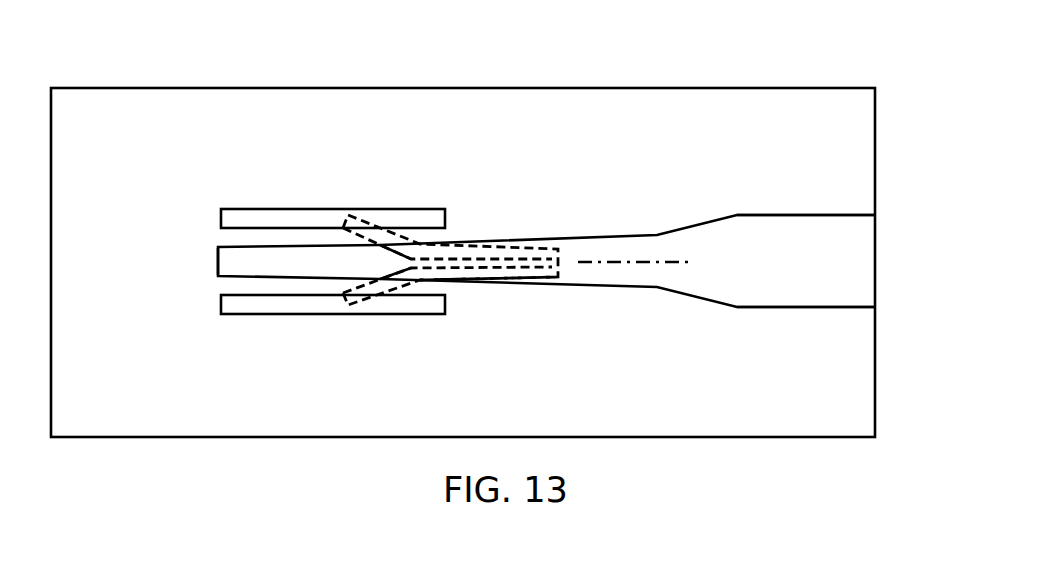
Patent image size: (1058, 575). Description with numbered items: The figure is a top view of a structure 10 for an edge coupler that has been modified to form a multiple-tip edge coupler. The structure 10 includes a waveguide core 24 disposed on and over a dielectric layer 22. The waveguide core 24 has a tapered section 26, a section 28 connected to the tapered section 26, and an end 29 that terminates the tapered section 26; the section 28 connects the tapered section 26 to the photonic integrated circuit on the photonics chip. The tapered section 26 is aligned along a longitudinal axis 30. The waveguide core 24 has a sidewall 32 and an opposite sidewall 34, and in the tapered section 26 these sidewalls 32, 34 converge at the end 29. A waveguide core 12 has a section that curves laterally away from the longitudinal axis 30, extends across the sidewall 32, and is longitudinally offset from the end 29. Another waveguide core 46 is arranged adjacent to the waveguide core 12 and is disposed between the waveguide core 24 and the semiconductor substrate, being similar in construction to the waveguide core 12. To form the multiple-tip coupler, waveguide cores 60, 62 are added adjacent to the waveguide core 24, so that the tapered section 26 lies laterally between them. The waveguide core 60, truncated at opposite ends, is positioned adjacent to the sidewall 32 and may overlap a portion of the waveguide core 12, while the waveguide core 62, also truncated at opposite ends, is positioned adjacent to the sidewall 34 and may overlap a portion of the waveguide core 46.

The structure 10 is at (128, 47).
The waveguide core 12 is at (455, 244).
The dielectric layer 22 is at (830, 163).
The waveguide core 24 is at (590, 183).
The tapered section 26 is at (287, 253).
The section 28 is at (797, 280).
The end 29 is at (218, 262).
The longitudinal axis 30 is at (645, 262).
The sidewall 32 is at (335, 243).
The sidewall 34 is at (338, 280).
The waveguide core 46 is at (523, 278).
The waveguide core 60 is at (417, 222).
The waveguide core 62 is at (410, 303).